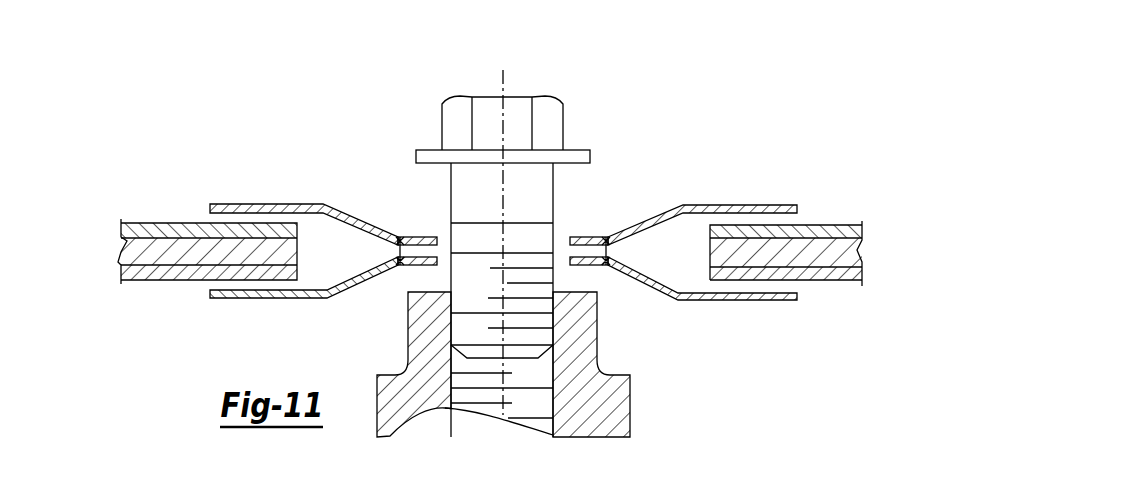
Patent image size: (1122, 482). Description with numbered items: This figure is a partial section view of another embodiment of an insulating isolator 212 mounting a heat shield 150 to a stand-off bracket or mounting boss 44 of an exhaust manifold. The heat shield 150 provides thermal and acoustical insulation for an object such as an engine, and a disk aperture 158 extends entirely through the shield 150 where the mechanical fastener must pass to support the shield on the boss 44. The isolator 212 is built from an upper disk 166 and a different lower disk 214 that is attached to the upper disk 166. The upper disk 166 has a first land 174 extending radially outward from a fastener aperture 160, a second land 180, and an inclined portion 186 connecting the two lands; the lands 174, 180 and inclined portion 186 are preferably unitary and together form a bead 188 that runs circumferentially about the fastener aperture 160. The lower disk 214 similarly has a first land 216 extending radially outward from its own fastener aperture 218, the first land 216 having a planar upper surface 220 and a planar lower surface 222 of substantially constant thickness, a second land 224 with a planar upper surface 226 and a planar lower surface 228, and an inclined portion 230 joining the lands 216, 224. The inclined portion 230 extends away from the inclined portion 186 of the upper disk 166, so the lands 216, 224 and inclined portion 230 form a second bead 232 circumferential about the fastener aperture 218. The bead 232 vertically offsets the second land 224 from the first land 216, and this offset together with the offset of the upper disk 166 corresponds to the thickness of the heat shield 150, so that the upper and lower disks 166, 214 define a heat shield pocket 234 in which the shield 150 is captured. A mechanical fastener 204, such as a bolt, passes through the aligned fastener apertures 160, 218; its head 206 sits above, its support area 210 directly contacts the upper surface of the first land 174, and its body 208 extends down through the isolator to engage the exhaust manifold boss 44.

The mounting boss 44 is at (603, 428).
The heat shield 150 is at (868, 224).
The disk aperture 158 is at (297, 242).
The fastener aperture 160 is at (437, 242).
The upper disk 166 is at (780, 205).
The first land 174 is at (592, 237).
The second land 180 is at (745, 205).
The inclined portion 186 is at (376, 221).
The bead 188 is at (328, 190).
The mechanical fastener 204 is at (482, 97).
The head 206 is at (516, 112).
The body 208 is at (493, 346).
The support area 210 is at (578, 150).
The insulating isolator 212 is at (702, 152).
The lower disk 214 is at (720, 302).
The first land 216 is at (398, 268).
The fastener aperture 218 is at (562, 264).
The upper surface 220 is at (488, 238).
The lower flange 222 is at (437, 265).
The second land 224 is at (297, 299).
The upper surface 226 is at (213, 299).
The lower surface 228 is at (230, 299).
The inclined portion 230 is at (343, 299).
The bead 232 is at (665, 313).
The heat shield pocket 234 is at (685, 268).